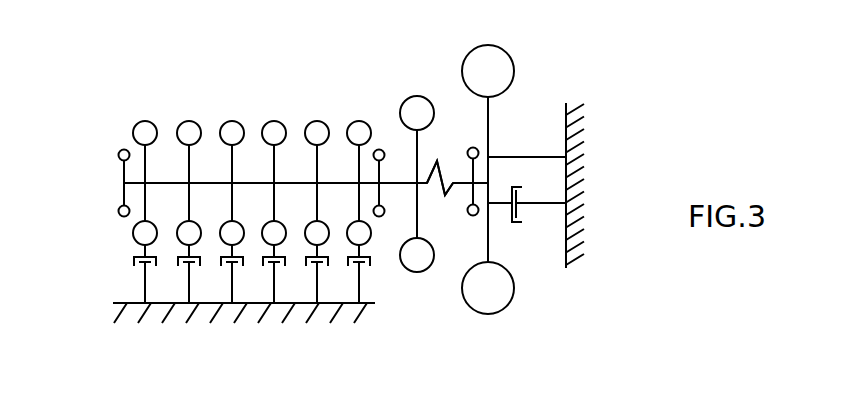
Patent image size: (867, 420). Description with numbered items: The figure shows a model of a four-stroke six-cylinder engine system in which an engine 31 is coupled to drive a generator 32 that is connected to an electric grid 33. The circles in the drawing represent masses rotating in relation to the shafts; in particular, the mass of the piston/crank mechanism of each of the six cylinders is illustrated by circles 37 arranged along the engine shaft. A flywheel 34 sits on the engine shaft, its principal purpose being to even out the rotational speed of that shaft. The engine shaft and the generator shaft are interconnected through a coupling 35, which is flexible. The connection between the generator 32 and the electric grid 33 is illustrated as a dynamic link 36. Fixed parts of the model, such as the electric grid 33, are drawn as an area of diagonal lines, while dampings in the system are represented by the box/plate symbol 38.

The engine 31 is at (115, 108).
The generator 32 is at (500, 44).
The electric grid 33 is at (588, 184).
The flywheel 34 is at (415, 96).
The coupling 35 is at (444, 197).
The dynamic link 36 is at (534, 226).
The circles 37 is at (132, 236).
The box/plate symbol 38 is at (132, 268).